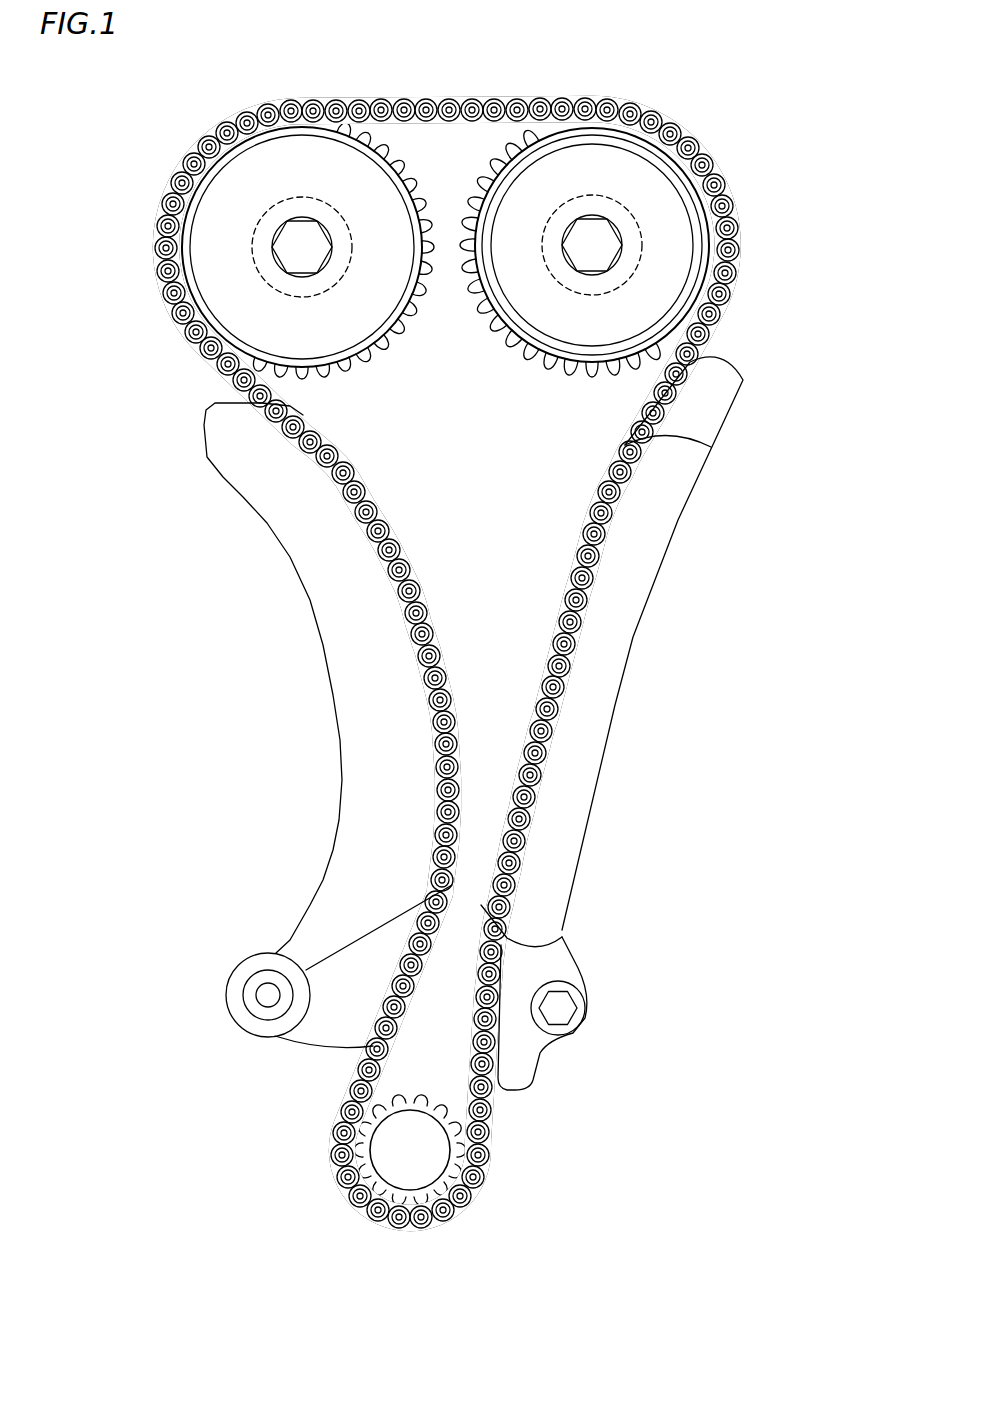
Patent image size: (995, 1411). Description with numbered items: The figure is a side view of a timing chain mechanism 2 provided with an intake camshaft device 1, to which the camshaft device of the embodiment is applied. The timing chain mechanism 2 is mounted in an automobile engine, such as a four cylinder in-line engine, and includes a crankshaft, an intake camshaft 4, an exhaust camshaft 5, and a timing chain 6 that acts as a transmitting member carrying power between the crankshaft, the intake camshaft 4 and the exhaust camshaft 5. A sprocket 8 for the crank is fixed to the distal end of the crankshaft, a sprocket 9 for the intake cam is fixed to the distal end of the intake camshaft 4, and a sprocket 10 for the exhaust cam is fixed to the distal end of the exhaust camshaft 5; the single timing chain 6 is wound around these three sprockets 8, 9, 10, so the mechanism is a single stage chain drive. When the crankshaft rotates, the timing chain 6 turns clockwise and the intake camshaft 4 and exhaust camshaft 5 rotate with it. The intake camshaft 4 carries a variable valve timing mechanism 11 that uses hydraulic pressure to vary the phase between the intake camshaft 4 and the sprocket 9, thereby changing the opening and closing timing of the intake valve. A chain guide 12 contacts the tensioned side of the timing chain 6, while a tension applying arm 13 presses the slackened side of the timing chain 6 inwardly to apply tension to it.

The intake camshaft device 1 is at (376, 130).
The timing chain mechanism 2 is at (637, 72).
The intake camshaft 4 is at (345, 275).
The exhaust camshaft 5 is at (550, 277).
The timing chain 6 is at (500, 972).
The sprocket for a crank 8 is at (453, 1152).
The sprocket for an intake cam 9 is at (412, 181).
The sprocket for an exhaust cam 10 is at (497, 157).
The variable valve timing mechanism 11 is at (346, 353).
The chain guide 12 is at (598, 705).
The tension applying arm 13 is at (355, 733).